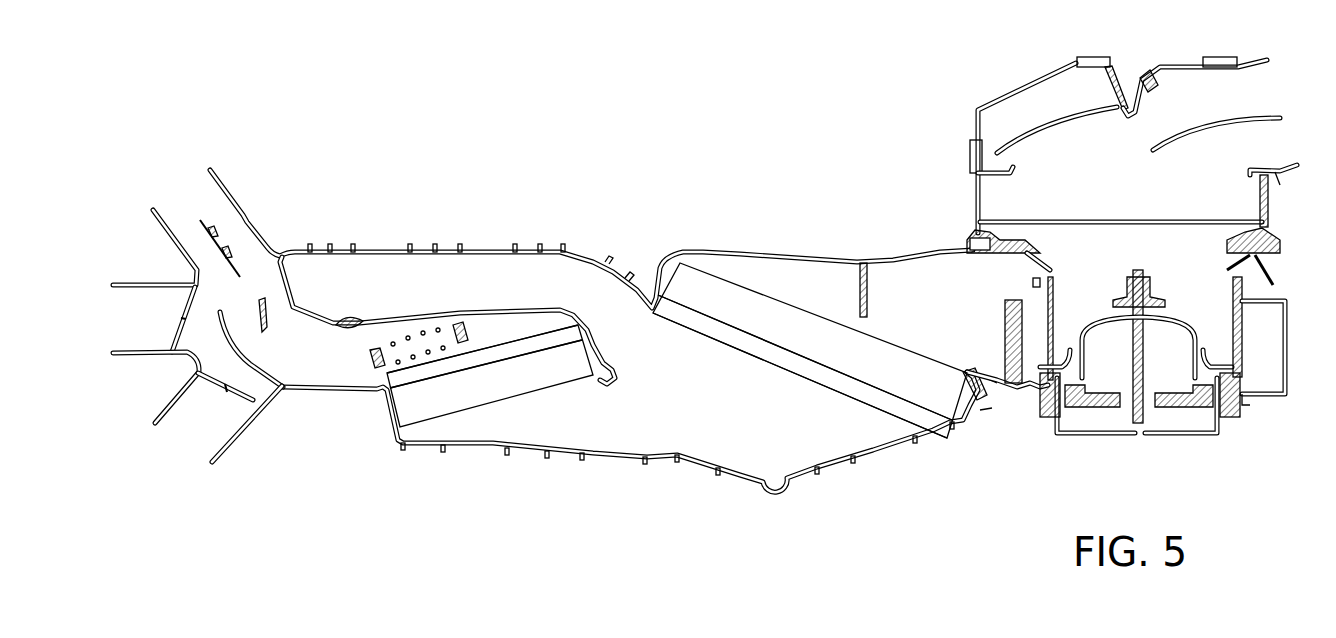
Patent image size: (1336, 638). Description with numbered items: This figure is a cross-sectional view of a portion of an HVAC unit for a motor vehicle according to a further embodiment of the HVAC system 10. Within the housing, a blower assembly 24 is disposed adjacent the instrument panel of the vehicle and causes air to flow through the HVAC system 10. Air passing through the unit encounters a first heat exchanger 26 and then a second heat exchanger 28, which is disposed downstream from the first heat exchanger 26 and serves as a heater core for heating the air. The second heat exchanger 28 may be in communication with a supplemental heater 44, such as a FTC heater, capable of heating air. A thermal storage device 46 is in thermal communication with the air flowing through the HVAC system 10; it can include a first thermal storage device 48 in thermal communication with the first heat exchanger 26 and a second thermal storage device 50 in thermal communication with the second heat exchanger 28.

The HVAC system 10 is at (445, 283).
The blower assembly 24 is at (1168, 420).
The first heat exchanger 26 is at (758, 323).
The second heat exchanger 28 is at (548, 375).
The supplemental heater 44 is at (370, 357).
The thermal storage device 46 is at (420, 375).
The first thermal storage device 48 is at (893, 417).
The second thermal storage device 50 is at (470, 370).